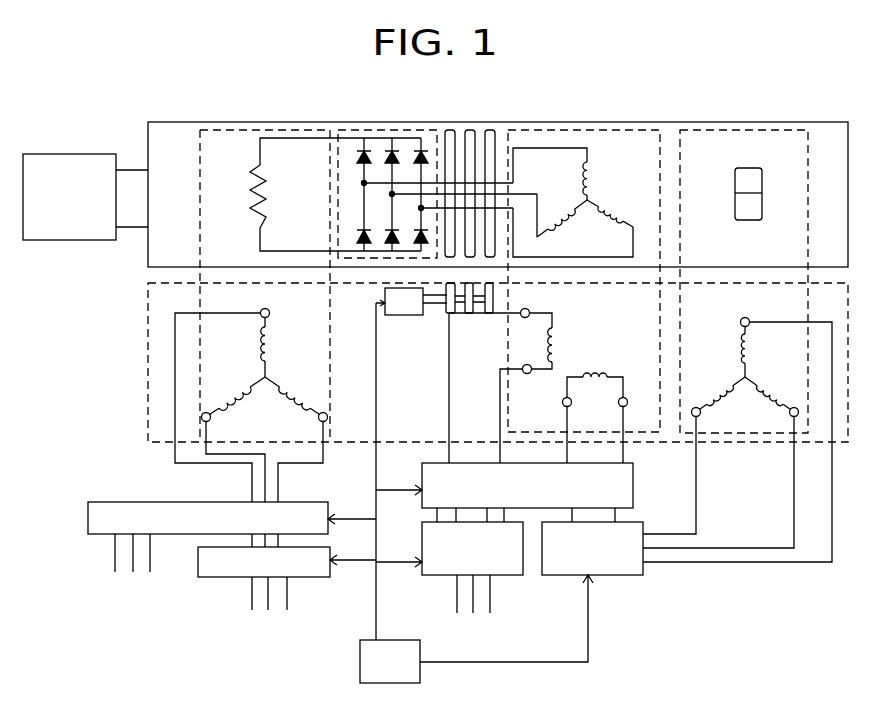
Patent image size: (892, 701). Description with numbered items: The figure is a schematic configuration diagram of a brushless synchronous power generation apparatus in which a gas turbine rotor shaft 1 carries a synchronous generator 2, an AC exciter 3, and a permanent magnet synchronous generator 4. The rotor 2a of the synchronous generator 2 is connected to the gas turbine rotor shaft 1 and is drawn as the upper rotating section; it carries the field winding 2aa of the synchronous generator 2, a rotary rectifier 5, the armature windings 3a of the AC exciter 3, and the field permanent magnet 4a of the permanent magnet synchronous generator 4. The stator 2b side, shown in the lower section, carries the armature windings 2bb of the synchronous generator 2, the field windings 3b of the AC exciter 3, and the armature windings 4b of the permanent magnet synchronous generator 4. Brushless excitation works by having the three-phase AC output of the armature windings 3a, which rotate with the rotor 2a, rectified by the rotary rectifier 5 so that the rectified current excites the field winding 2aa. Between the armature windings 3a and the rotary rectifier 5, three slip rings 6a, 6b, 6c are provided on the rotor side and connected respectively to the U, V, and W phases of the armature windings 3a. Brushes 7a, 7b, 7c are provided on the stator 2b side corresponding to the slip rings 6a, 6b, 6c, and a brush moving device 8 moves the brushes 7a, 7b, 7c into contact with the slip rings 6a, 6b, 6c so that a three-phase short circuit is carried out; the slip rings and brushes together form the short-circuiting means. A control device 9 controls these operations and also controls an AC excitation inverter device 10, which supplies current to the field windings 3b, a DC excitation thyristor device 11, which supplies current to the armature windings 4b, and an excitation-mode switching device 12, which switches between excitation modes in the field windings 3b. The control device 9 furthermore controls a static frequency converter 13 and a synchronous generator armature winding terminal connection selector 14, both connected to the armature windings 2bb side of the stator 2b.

The gas turbine rotor shaft 1 is at (68, 161).
The synchronous generator 2 is at (238, 128).
The rotor 2a is at (148, 253).
The field winding 2aa is at (274, 191).
The stator 2b is at (148, 360).
The armature windings 2bb is at (272, 333).
The AC exciter 3 is at (647, 130).
The armature windings 3a is at (588, 171).
The field windings 3b is at (548, 330).
The permanent magnet synchronous generator 4 is at (808, 136).
The field permanent magnet 4a is at (758, 178).
The armature windings 4b is at (735, 338).
The rotary rectifier 5 is at (432, 130).
The slip ring 6a is at (452, 137).
The slip ring 6b is at (470, 132).
The slip ring 6c is at (495, 135).
The brush 7a is at (445, 304).
The brush 7b is at (466, 318).
The brush 7c is at (490, 318).
The brush moving device 8 is at (409, 303).
The control device 9 is at (362, 660).
The AC excitation inverter device 10 is at (428, 547).
The DC excitation thyristor device 11 is at (638, 532).
The excitation-mode switching device 12 is at (636, 480).
The static frequency converter 13 is at (310, 565).
The synchronous generator armature winding terminal connection selector 14 is at (293, 515).